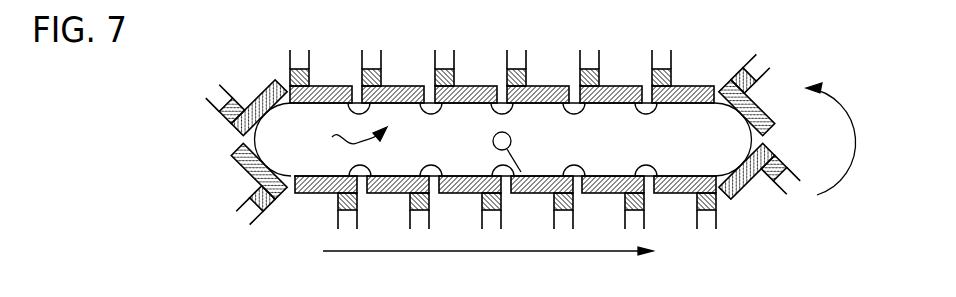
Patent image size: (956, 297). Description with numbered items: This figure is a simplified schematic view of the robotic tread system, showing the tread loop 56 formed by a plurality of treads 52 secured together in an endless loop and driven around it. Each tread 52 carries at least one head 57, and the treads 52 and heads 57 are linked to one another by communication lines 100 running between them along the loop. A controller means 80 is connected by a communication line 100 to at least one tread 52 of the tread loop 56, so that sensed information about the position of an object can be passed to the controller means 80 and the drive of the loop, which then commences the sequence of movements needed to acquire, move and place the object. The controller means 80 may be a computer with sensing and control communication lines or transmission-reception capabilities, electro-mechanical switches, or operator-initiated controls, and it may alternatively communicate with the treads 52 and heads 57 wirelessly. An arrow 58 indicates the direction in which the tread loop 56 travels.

The tread 52 is at (537, 86).
The head 57 is at (712, 97).
The tread loop 56 is at (347, 139).
The direction of travel arrow 58 is at (460, 252).
The controller means 80 is at (493, 141).
The communication line 100 is at (510, 148).